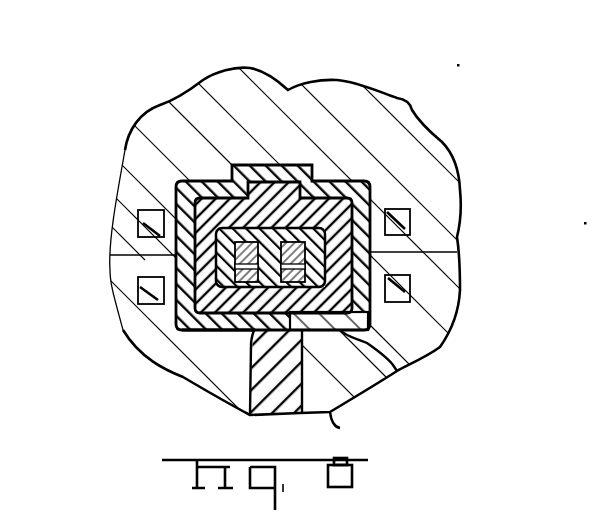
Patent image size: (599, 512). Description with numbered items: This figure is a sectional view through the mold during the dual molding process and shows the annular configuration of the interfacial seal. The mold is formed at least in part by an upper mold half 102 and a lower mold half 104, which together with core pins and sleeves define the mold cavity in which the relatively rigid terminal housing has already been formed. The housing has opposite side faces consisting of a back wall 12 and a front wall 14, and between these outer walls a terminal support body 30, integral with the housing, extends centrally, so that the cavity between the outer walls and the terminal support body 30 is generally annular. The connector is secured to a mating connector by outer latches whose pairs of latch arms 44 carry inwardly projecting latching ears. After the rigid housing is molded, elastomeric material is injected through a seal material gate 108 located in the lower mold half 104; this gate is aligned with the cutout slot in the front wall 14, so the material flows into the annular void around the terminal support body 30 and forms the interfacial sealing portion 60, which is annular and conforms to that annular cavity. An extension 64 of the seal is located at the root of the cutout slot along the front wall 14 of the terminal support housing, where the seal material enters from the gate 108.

The upper mold half 102 is at (247, 64).
The back wall 12 is at (324, 181).
The terminal support body 30 is at (262, 228).
The interfacial sealing portion 60 is at (372, 182).
The latch arms 44 is at (140, 287).
The seal material gate 108 is at (275, 334).
The front wall 14 is at (400, 370).
The lower mold half 104 is at (340, 428).
The extension of the seal 64 is at (267, 321).